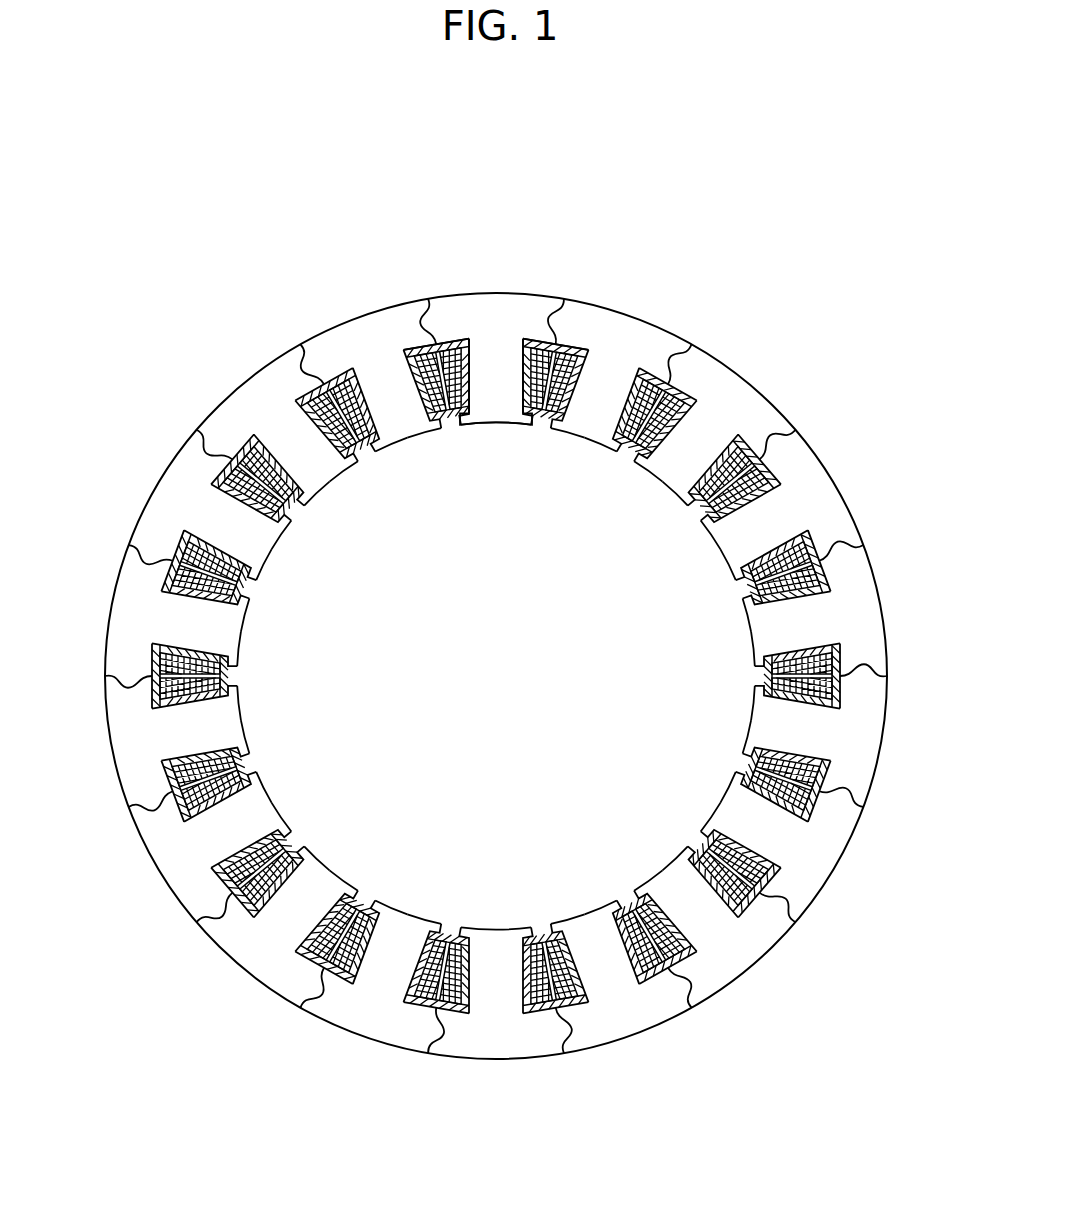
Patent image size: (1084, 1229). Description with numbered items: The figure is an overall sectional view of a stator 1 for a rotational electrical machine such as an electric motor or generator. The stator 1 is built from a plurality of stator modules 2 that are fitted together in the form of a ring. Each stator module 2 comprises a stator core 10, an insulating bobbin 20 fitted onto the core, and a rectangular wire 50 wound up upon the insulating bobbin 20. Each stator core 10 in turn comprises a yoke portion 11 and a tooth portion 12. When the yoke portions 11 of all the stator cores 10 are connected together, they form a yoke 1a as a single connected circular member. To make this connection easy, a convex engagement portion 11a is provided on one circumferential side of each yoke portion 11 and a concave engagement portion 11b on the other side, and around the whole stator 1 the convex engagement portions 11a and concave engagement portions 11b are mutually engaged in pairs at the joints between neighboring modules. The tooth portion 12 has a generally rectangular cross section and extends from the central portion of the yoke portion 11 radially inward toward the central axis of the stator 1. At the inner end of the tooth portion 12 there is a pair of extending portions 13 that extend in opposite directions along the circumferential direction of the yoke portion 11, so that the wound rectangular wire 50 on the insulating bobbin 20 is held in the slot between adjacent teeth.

The stator 1 is at (496, 587).
The yoke 1a is at (528, 676).
The stator module 2 is at (464, 628).
The stator core 10 is at (496, 623).
The yoke portion 11 is at (496, 268).
The convex engagement portion 11a is at (689, 317).
The concave engagement portion 11b is at (834, 442).
The tooth portion 12 is at (496, 429).
The extending portion 13 is at (512, 459).
The insulating bobbin 20 is at (515, 321).
The rectangular wire 50 is at (511, 415).